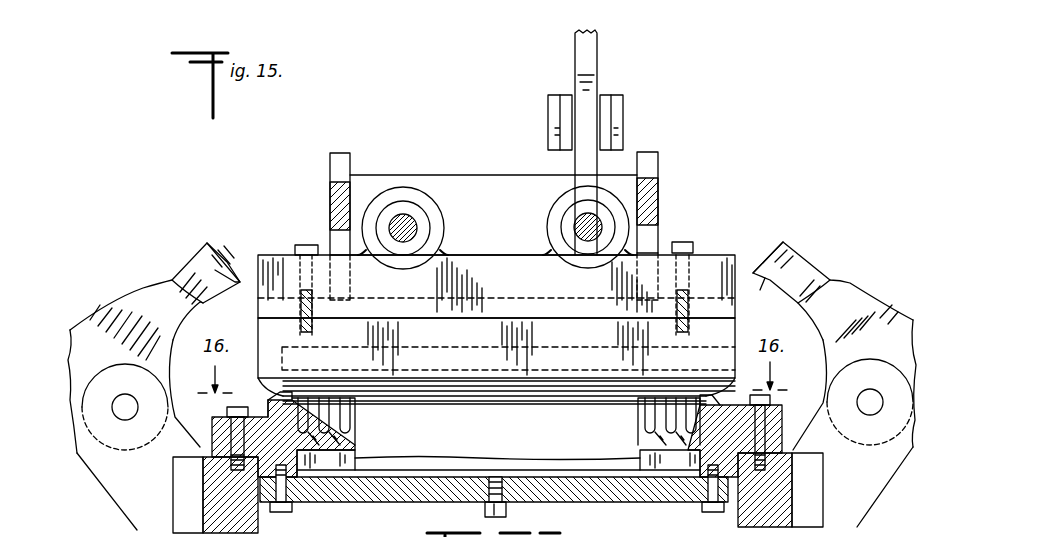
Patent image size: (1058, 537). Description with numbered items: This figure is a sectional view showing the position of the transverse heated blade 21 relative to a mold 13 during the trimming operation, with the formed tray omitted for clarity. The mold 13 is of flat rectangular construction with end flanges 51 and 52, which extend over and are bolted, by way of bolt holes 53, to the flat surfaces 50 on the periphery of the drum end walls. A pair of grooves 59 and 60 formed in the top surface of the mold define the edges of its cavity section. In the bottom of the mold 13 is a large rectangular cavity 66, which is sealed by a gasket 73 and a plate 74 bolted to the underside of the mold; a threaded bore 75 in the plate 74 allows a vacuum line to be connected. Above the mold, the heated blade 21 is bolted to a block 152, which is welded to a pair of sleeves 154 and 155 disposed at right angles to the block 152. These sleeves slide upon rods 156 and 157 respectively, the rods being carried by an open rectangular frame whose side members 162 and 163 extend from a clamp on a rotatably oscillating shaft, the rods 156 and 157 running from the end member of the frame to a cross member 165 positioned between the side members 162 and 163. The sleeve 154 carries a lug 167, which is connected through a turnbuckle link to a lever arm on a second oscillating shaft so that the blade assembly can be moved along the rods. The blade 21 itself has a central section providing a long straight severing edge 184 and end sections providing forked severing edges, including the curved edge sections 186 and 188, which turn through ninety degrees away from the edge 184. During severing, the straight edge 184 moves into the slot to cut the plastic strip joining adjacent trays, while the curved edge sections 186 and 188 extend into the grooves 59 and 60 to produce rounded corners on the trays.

The lug 167 is at (590, 75).
The cross member 165 is at (428, 182).
The side member 163 is at (330, 205).
The side member 162 is at (650, 210).
The sleeve 155 is at (395, 190).
The rod 157 is at (412, 222).
The sleeve 154 is at (553, 218).
The rod 156 is at (598, 222).
The block 152 is at (715, 257).
The heated blade 21 is at (730, 358).
The edge section 186 is at (285, 388).
The edge section 188 is at (706, 392).
The straight severing edge 184 is at (458, 408).
The flat surface 50 is at (225, 452).
The end flange 51 is at (216, 416).
The bolt hole 53 is at (262, 404).
The groove 59 is at (270, 398).
The groove 60 is at (720, 400).
The end flange 52 is at (778, 422).
The mold 13 is at (333, 466).
The rectangular cavity 66 is at (668, 470).
The plate 74 is at (622, 500).
The threaded bore 75 is at (494, 478).
The gasket 73 is at (302, 465).